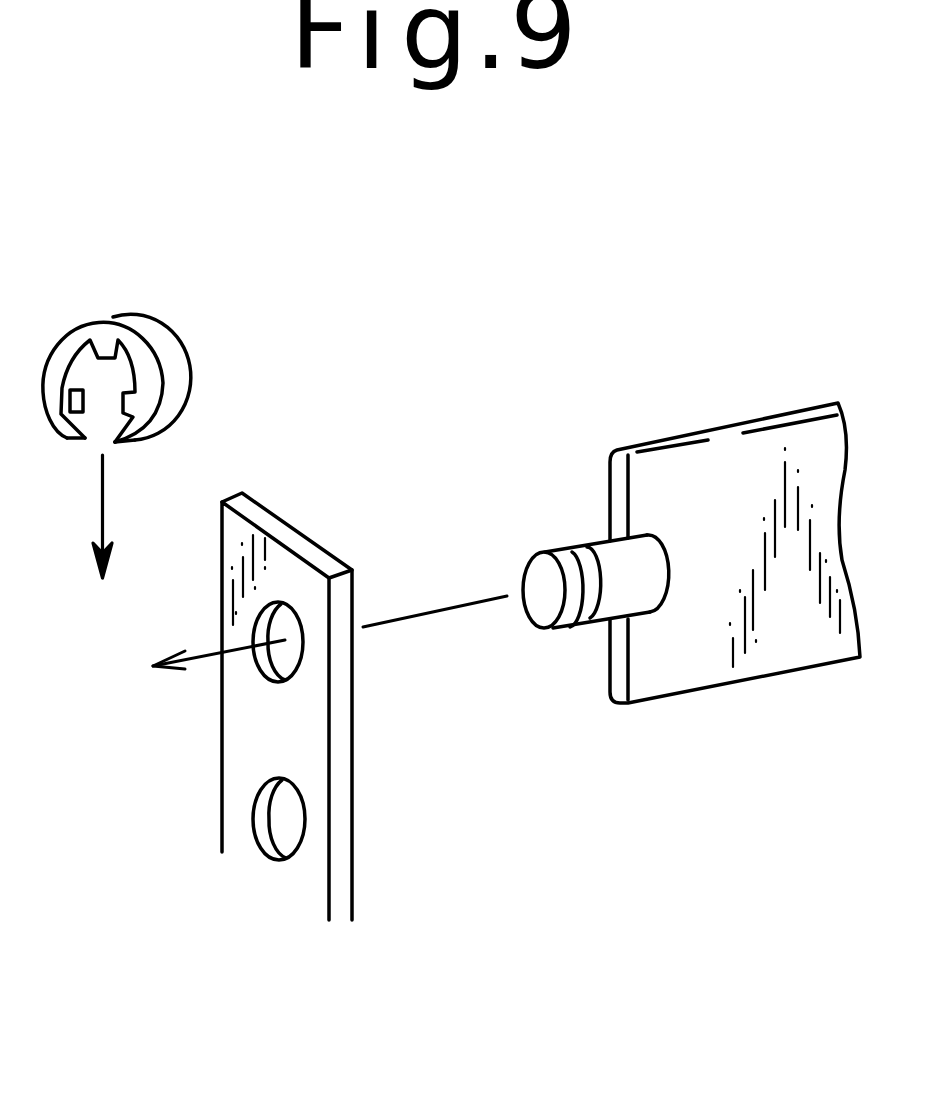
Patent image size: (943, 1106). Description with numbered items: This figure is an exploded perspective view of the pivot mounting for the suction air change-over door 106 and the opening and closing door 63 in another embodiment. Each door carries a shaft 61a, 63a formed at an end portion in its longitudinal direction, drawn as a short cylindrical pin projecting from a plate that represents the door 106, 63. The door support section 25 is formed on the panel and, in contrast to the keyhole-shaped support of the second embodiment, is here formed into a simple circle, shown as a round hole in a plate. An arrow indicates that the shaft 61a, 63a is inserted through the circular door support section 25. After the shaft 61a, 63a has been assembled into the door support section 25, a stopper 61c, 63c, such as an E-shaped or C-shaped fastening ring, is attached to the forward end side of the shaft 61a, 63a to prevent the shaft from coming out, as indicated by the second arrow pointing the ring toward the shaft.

The stopper 61c is at (201, 301).
The stopper 63c is at (140, 312).
The door support section 25 is at (293, 745).
The suction air change-over door 106 is at (722, 485).
The opening and closing door 63 is at (728, 468).
The shaft 61a is at (650, 714).
The shaft 63a is at (600, 617).